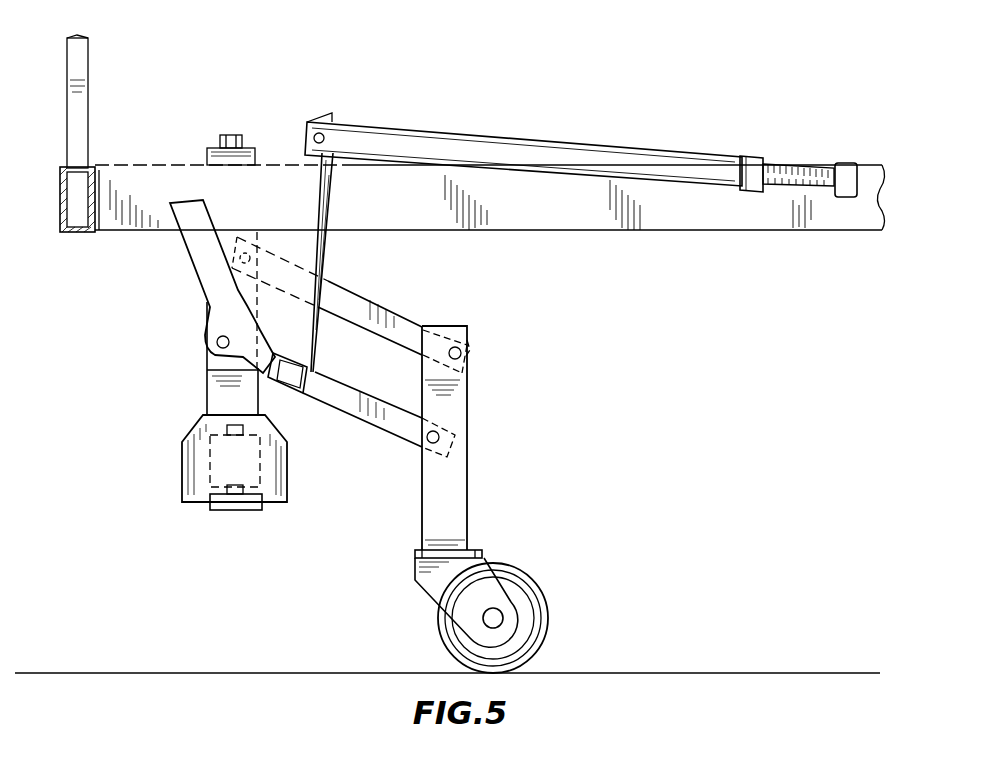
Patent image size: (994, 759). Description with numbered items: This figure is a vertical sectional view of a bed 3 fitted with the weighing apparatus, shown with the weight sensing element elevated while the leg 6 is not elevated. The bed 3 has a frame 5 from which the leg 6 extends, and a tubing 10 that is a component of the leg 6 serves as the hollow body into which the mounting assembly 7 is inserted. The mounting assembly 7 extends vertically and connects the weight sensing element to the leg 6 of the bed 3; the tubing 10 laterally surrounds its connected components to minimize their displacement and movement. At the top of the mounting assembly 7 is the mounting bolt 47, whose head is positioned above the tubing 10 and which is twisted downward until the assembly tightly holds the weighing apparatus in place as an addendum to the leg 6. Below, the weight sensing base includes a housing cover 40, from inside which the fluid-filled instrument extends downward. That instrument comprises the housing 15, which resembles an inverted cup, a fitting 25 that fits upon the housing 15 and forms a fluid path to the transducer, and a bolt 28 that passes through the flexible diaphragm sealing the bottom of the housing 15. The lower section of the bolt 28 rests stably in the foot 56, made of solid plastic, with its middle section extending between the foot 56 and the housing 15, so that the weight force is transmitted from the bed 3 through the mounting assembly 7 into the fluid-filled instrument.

The bed 3 is at (650, 210).
The frame 5 is at (58, 203).
The leg 6 is at (468, 447).
The mounting assembly 7 is at (218, 395).
The tubing 10 is at (207, 330).
The housing 15 is at (210, 462).
The fitting 25 is at (200, 422).
The bolt 28 is at (185, 488).
The housing cover 40 is at (290, 477).
The mounting bolt 47 is at (232, 133).
The foot 56 is at (243, 510).